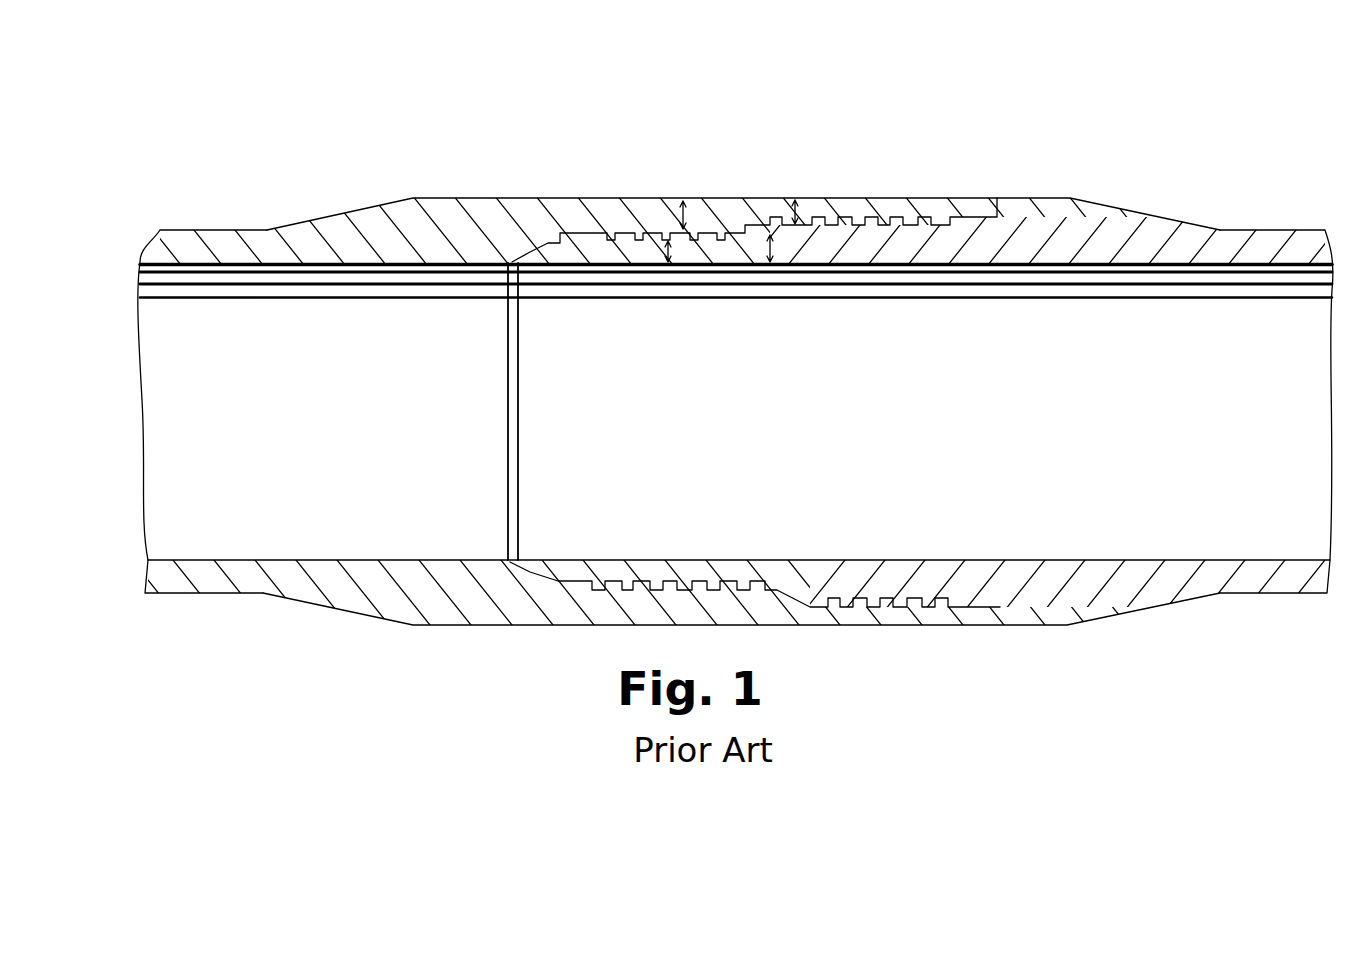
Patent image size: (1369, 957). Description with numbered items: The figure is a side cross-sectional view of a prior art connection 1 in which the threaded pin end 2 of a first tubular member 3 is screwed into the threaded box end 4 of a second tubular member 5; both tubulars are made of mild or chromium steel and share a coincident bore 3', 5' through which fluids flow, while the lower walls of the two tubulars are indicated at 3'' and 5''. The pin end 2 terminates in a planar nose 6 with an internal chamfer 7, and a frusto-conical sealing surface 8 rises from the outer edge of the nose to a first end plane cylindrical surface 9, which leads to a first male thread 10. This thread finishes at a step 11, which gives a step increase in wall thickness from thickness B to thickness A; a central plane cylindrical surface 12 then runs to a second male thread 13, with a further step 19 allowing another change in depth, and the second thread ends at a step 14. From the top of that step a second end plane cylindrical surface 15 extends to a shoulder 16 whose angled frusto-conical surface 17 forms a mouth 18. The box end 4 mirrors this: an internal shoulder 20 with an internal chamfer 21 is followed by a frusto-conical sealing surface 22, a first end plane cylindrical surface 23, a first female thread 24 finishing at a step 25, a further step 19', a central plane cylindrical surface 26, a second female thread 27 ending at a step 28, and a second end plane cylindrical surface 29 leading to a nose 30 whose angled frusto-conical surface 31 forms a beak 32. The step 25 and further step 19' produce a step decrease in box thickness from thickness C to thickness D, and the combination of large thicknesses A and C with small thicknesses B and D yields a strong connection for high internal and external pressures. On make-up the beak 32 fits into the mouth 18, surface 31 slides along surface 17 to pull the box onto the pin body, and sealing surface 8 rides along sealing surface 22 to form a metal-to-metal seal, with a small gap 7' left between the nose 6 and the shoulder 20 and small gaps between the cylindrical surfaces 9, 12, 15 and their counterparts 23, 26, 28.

The connection 1 is at (775, 182).
The threaded pin end 2 is at (845, 265).
The first tubular member 3 is at (1276, 411).
The bore 3' is at (1144, 405).
The second pipe bottom wall 3'' is at (1269, 509).
The threaded box end 4 is at (623, 198).
The second tubular member 5 is at (202, 411).
The bore 5' is at (302, 405).
The first pipe bottom wall 5'' is at (220, 511).
The planar nose 6 is at (548, 240).
The internal chamfer 7 is at (556, 411).
The gap 7' is at (558, 475).
The frusto-conical sealing surface 8 is at (547, 265).
The first end plane cylindrical surface 9 is at (562, 265).
The first male thread 10 is at (640, 265).
The step 11 is at (720, 265).
The central plane cylindrical surface 12 is at (770, 265).
The second male thread 13 is at (865, 240).
The step 14 is at (938, 262).
The second end plane cylindrical surface 15 is at (975, 225).
The shoulder 16 is at (1000, 215).
The angled frusto-conical surface 17 is at (998, 210).
The mouth 18 is at (980, 217).
The further step 19 is at (754, 183).
The further step 19' is at (755, 553).
The internal shoulder 20 is at (515, 250).
The internal chamfer 21 is at (507, 440).
The frusto-conical sealing surface 22 is at (560, 242).
The first end plane cylindrical surface 23 is at (578, 238).
The first female thread 24 is at (600, 232).
The step 25 is at (722, 225).
The central plane cylindrical surface 26 is at (745, 233).
The second female thread 27 is at (855, 225).
The step 28 is at (945, 222).
The second end plane cylindrical surface 29 is at (973, 610).
The nose 30 is at (1000, 607).
The angled frusto-conical surface 31 is at (994, 607).
The beak 32 is at (985, 607).
The thickness A is at (780, 265).
The thickness B is at (668, 265).
The thickness C is at (683, 200).
The thickness D is at (800, 202).